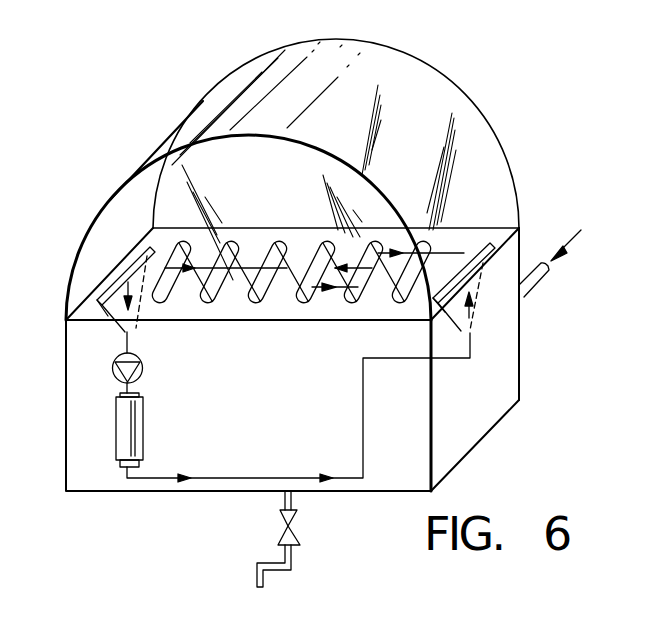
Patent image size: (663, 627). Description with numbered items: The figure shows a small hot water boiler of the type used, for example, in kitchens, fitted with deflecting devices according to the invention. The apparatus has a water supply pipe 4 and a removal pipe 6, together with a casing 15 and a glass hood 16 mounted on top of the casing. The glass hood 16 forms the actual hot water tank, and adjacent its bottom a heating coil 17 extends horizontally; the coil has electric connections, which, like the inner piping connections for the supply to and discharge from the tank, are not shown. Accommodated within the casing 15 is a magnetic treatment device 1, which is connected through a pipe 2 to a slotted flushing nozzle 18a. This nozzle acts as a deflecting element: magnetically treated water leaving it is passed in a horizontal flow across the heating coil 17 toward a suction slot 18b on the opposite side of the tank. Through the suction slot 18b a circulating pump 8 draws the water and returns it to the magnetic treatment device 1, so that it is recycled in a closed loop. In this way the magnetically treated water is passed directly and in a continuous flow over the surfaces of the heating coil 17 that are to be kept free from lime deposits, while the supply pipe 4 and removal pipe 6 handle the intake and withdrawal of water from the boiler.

The magnetic treatment device 1 is at (143, 416).
The pipe 2 is at (362, 392).
The water supply pipe 4 is at (532, 284).
The removal pipe 6 is at (258, 565).
The circulating pump 8 is at (143, 366).
The casing 15 is at (66, 380).
The glass hood 16 is at (464, 103).
The heating coil 17 is at (250, 285).
The slotted flushing nozzle 18a is at (480, 272).
The suction slot 18b is at (123, 265).